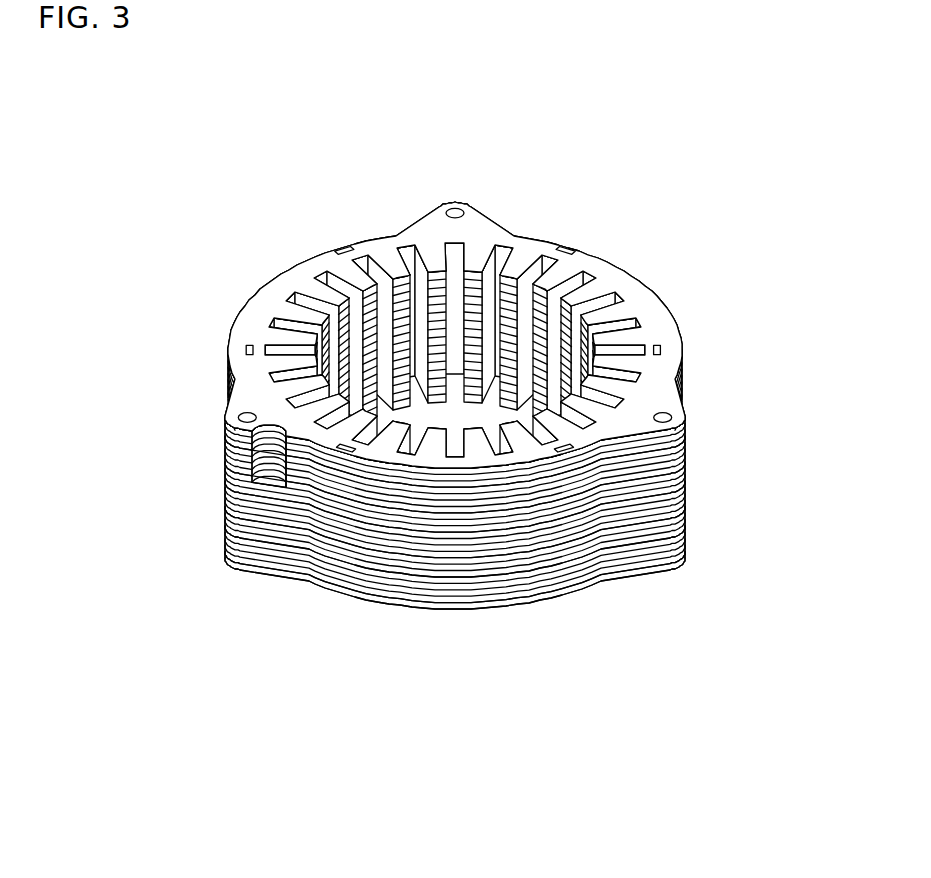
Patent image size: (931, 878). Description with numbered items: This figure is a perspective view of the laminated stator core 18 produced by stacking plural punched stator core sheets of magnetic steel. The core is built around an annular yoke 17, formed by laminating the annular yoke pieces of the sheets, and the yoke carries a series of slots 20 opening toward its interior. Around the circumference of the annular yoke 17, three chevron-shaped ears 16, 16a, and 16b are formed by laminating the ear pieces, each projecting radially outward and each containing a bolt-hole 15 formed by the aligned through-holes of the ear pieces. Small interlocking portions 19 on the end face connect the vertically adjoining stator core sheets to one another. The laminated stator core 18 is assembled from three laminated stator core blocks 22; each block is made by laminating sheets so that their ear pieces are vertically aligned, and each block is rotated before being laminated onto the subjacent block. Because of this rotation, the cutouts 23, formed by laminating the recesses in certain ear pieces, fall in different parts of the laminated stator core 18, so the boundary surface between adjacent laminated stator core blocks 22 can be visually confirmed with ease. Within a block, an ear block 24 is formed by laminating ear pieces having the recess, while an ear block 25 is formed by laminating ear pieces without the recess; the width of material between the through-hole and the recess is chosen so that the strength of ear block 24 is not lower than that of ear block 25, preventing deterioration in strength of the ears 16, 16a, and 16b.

The bolt-hole 15 is at (452, 203).
The ear 16 is at (442, 410).
The ear 16a is at (433, 202).
The ear 16b is at (699, 441).
The annular yoke 17 is at (302, 302).
The laminated stator core 18 is at (628, 254).
The interlocking portion 19 is at (557, 243).
The slot 20 is at (458, 255).
The laminated stator core block 22 is at (550, 627).
The cutout 23 is at (293, 461).
The ear block 24 is at (222, 478).
The ear block 25 is at (222, 568).